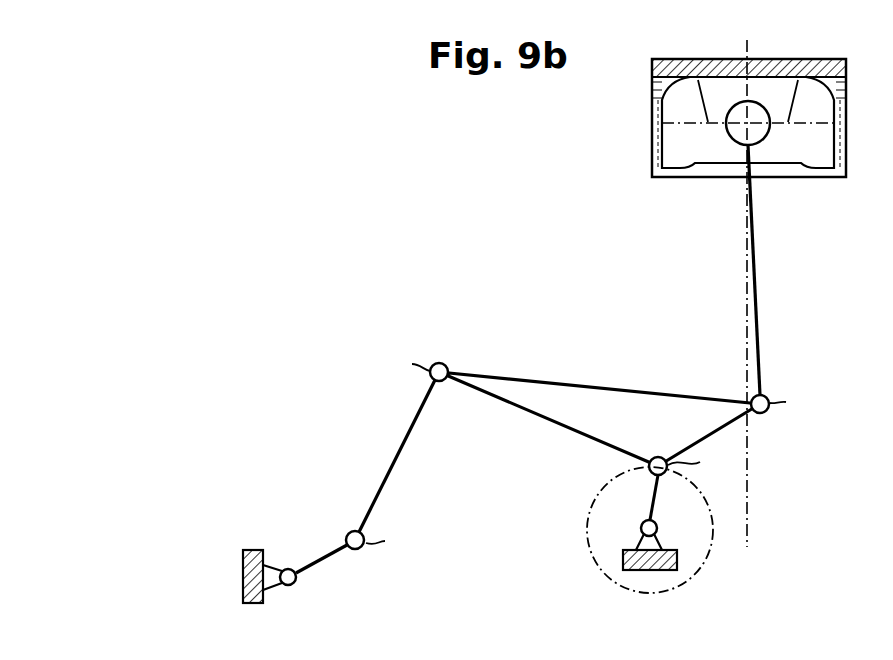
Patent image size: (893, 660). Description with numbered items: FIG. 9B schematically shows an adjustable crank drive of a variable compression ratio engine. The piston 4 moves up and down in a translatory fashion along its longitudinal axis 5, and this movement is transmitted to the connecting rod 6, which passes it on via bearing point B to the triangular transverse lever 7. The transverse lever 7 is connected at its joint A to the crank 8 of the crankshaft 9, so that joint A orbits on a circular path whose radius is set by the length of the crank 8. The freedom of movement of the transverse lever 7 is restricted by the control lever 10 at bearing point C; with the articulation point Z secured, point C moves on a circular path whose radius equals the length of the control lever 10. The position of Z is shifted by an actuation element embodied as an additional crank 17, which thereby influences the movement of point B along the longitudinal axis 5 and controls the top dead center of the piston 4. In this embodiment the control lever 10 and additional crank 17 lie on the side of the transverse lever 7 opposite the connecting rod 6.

The piston 4 is at (704, 62).
The longitudinal axis 5 is at (750, 502).
The connecting rod 6 is at (757, 313).
The triangular transverse lever 7 is at (568, 383).
The crank 8 is at (655, 498).
The crankshaft 9 is at (598, 573).
The control lever 10 is at (404, 445).
The additional crank 17 is at (322, 557).